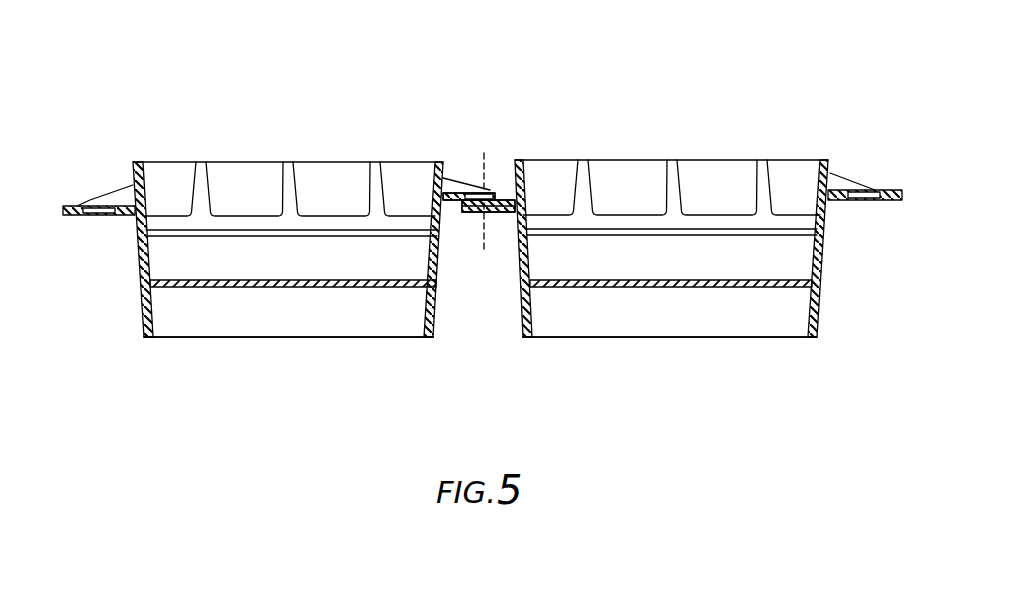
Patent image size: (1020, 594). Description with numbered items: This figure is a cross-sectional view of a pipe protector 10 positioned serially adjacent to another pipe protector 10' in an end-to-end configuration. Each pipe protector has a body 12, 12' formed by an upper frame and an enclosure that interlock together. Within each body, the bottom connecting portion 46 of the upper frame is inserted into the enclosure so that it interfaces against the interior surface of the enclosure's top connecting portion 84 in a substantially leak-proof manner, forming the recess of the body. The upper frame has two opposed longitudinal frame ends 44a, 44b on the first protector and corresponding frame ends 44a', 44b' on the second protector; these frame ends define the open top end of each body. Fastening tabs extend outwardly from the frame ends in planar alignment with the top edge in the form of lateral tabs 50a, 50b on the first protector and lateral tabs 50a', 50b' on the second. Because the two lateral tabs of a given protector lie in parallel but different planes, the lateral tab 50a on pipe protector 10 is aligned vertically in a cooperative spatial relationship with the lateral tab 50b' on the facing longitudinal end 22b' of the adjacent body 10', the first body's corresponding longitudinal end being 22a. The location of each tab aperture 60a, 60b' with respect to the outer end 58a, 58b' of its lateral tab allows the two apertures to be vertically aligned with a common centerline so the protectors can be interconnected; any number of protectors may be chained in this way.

The pipe protector 10 is at (288, 175).
The serially adjacent body 10' is at (671, 199).
The body 12 is at (247, 345).
The body 12' is at (713, 308).
The longitudinal end 22a is at (428, 337).
The longitudinal end 22b' is at (555, 374).
The frame end 44a is at (424, 213).
The frame end 44b is at (108, 205).
The frame end 44a' is at (854, 225).
The frame end 44b' is at (549, 231).
The bottom connecting portion 46 is at (190, 238).
The lateral tab 50a is at (469, 119).
The lateral tab 50b is at (82, 167).
The lateral tab 50a' is at (868, 216).
The lateral tab 50b' is at (469, 244).
The outer end 58a is at (505, 200).
The outer end 58b' is at (482, 314).
The tab aperture 60a is at (490, 192).
The tab aperture 60b' is at (499, 305).
The top connecting portion 84 is at (152, 236).